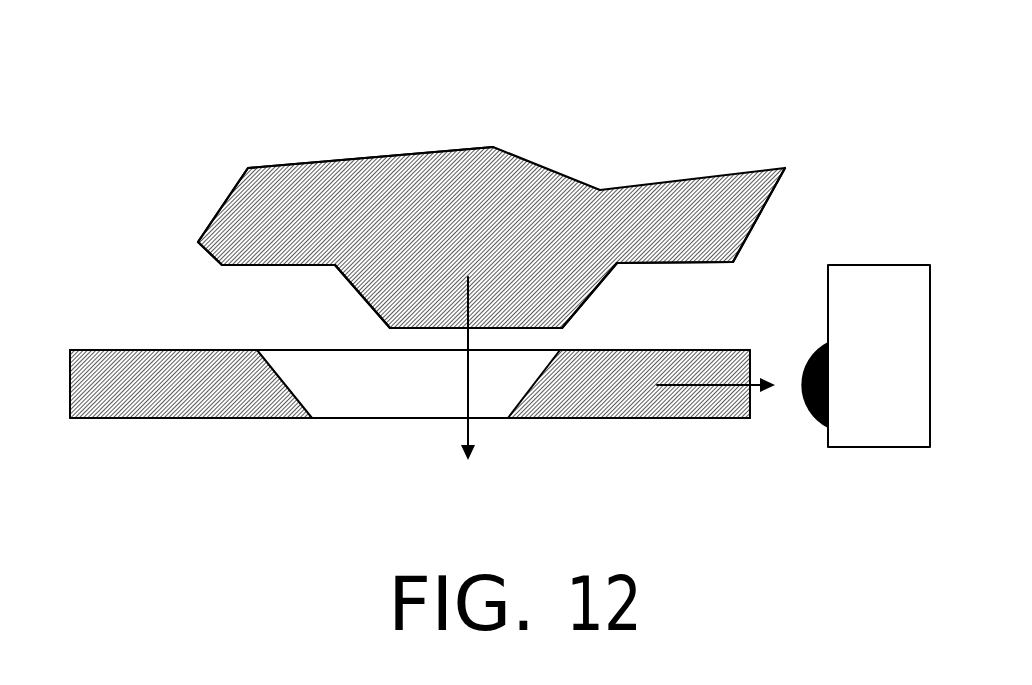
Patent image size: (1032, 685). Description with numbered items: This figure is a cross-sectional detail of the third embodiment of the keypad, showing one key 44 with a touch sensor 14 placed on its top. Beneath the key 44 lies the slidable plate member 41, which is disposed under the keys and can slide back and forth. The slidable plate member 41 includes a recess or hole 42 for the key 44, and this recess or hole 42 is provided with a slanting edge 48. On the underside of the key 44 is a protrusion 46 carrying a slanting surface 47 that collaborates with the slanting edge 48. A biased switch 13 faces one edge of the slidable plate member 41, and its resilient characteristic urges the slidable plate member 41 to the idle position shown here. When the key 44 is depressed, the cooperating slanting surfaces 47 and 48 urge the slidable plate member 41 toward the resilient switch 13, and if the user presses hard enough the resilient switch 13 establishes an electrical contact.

The touch sensor 14 is at (395, 188).
The key 44 is at (465, 147).
The protrusion 46 is at (433, 292).
The slanting surface 47 is at (593, 297).
The slidable plate member 41 is at (157, 397).
The recess or hole 42 is at (383, 400).
The slanting edge 48 is at (542, 380).
The biased switch 13 is at (852, 433).